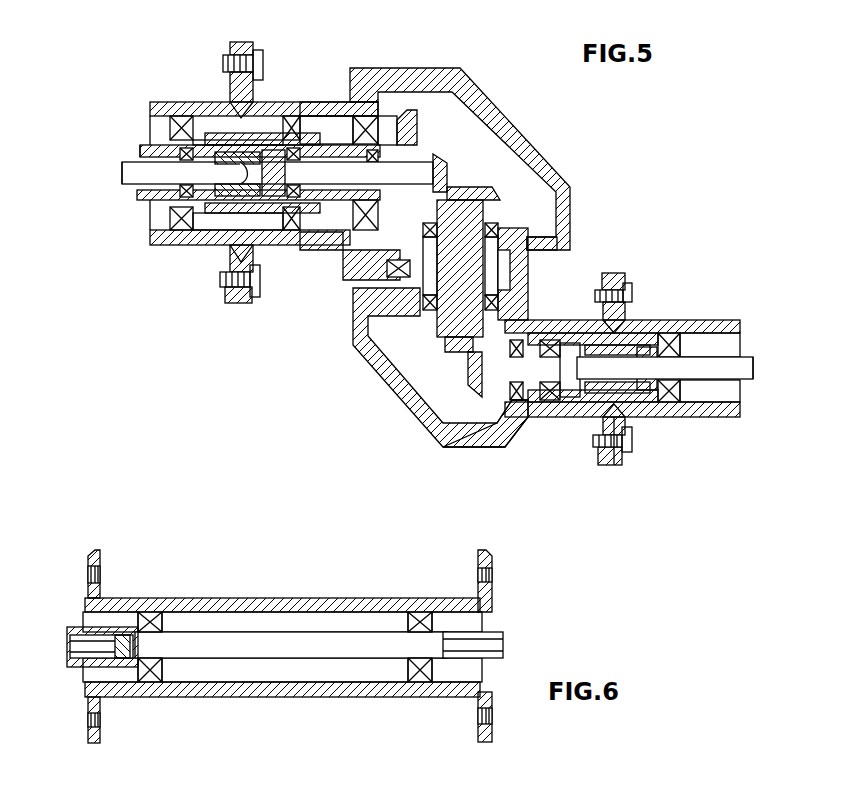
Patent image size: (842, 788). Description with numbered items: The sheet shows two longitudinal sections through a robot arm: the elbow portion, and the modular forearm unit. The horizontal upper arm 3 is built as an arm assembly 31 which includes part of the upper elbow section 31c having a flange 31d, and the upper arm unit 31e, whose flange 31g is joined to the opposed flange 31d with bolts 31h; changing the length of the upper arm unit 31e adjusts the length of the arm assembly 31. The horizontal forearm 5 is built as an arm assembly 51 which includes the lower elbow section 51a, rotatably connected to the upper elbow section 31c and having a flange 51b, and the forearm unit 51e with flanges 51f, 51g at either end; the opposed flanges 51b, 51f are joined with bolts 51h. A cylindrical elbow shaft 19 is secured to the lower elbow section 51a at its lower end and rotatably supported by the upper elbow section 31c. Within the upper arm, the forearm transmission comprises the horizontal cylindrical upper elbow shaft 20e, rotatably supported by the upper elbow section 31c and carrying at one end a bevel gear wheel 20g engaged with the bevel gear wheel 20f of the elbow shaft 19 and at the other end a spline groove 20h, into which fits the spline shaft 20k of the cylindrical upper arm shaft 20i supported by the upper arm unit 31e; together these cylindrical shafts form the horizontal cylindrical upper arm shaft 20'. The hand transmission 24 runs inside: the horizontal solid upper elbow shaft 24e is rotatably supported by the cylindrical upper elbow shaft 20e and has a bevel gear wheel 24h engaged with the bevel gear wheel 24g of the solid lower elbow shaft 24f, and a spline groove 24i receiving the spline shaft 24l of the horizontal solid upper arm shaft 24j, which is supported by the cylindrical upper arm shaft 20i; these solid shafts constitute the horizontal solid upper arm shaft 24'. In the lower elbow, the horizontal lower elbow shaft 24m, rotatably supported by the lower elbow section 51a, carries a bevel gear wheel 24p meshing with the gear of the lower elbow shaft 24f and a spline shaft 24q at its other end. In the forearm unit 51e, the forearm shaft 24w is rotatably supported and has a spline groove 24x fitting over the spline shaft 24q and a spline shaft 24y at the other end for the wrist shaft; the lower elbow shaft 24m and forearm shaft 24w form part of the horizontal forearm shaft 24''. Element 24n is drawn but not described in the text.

In FIG. 5, the horizontal upper arm 3 is at (228, 303).
In FIG. 5, the horizontal forearm 5 is at (614, 465).
In FIG. 5, the cylindrical elbow shaft 19 is at (530, 296).
In FIG. 5, the horizontal cylindrical upper arm shaft 20' is at (224, 150).
In FIG. 5, the horizontal cylindrical upper elbow shaft 20e is at (333, 118).
In FIG. 5, the bevel gear wheel 20f is at (535, 237).
In FIG. 5, the bevel gear wheel 20g is at (414, 115).
In FIG. 5, the spline groove 20h is at (283, 135).
In FIG. 5, the cylindrical upper arm shaft 20i is at (165, 134).
In FIG. 5, the spline shaft 20k is at (205, 230).
In FIG. 5, the hand transmission 24 is at (231, 251).
In FIG. 5, the horizontal solid upper arm shaft 24' is at (249, 177).
In FIG. 5, the horizontal forearm shaft 24'' is at (761, 386).
In FIG. 5, the horizontal solid upper elbow shaft 24e is at (355, 265).
In FIG. 5, the solid lower elbow shaft 24f is at (432, 326).
In FIG. 5, the bevel gear wheel 24g is at (480, 193).
In FIG. 5, the bevel gear wheel 24h is at (448, 165).
In FIG. 5, the spline groove 24i is at (278, 196).
In FIG. 5, the horizontal solid upper arm shaft 24j is at (128, 190).
In FIG. 5, the spline shaft 24l is at (195, 102).
In FIG. 5, the horizontal lower elbow shaft 24m is at (492, 440).
In FIG. 5, the hub extension 24n is at (460, 352).
In FIG. 5, the bevel gear wheel 24p is at (470, 386).
In FIG. 5, the spline shaft 24q is at (564, 402).
In FIG. 5, the forearm shaft 24w is at (740, 357).
In FIG. 6, the forearm shaft 24w is at (226, 665).
In FIG. 5, the spline groove 24x is at (605, 360).
In FIG. 6, the spline groove 24x is at (70, 652).
In FIG. 6, the spline shaft 24y is at (503, 655).
In FIG. 5, the arm assembly 31 is at (238, 42).
In FIG. 5, the upper elbow section 31c is at (424, 68).
In FIG. 5, the flange 31d is at (258, 50).
In FIG. 5, the upper arm unit 31e is at (228, 102).
In FIG. 5, the flange 31g is at (232, 55).
In FIG. 5, the bolt 31h is at (255, 297).
In FIG. 5, the arm assembly 51 is at (618, 273).
In FIG. 5, the lower elbow section 51a is at (445, 447).
In FIG. 5, the flange 51b is at (606, 465).
In FIG. 5, the forearm unit 51e is at (697, 320).
In FIG. 6, the forearm unit 51e is at (262, 598).
In FIG. 5, the flange 51f is at (627, 452).
In FIG. 6, the flange 51f is at (100, 556).
In FIG. 6, the flange 51g is at (492, 560).
In FIG. 5, the bolt 51h is at (625, 443).